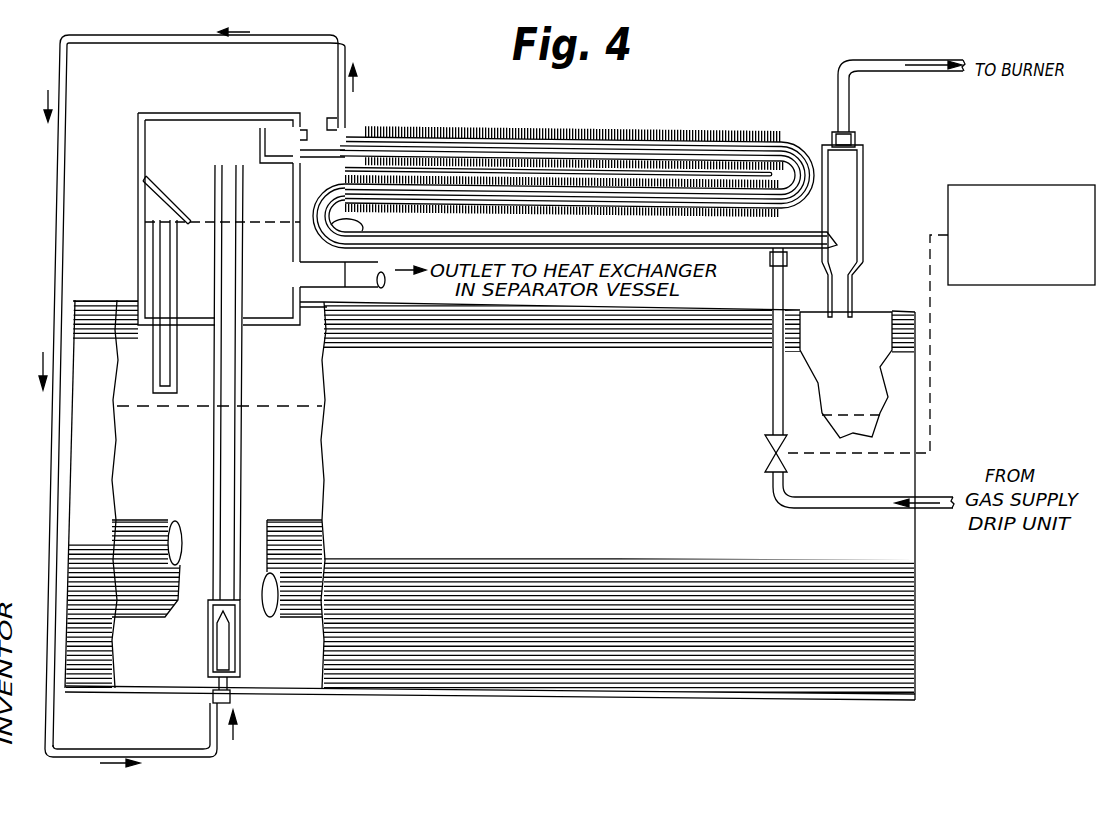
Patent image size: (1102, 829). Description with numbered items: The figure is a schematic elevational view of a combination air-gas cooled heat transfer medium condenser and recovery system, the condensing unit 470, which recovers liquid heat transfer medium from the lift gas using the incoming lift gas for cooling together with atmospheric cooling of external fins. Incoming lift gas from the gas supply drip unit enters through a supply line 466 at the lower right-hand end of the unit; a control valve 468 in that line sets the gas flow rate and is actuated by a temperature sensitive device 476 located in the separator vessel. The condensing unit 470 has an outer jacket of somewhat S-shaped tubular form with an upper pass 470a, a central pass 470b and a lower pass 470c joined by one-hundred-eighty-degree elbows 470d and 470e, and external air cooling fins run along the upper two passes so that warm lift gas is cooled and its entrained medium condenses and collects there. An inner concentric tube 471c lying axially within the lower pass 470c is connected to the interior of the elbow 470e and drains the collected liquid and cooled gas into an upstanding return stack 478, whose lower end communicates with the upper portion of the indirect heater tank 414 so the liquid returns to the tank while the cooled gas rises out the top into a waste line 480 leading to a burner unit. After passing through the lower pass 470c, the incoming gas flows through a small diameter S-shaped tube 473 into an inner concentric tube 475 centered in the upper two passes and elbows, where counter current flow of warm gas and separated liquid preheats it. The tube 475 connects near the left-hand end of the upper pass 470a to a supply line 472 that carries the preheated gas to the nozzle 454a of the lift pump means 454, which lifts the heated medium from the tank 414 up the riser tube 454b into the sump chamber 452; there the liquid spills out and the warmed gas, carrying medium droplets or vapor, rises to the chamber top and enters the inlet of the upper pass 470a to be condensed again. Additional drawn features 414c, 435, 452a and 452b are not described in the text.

The indirect heater tank 414 is at (500, 708).
The liquid level 414c is at (290, 390).
The conduit 435 is at (158, 252).
The sump chamber 452 is at (210, 108).
The liquid level in housing 452a is at (195, 217).
The baffle 452b is at (155, 178).
The lift pump means 454 is at (248, 636).
The nozzle 454a is at (220, 652).
The riser tube 454b is at (243, 465).
The supply line 466 is at (773, 294).
The control valve 468 is at (765, 444).
The condensing unit 470 is at (497, 120).
The upper pass 470a is at (660, 138).
The central pass 470b is at (640, 212).
The lower pass 470c is at (727, 230).
The elbow 470d is at (812, 148).
The elbow 470e is at (318, 203).
The inner concentric tube 471c is at (598, 236).
The supply line 472 is at (58, 193).
The S-shaped small diameter tube 473 is at (358, 222).
The inner concentric tube 475 is at (490, 195).
The temperature sensitive device 476 is at (1033, 186).
The return stack 478 is at (865, 195).
The waste line 480 is at (884, 72).